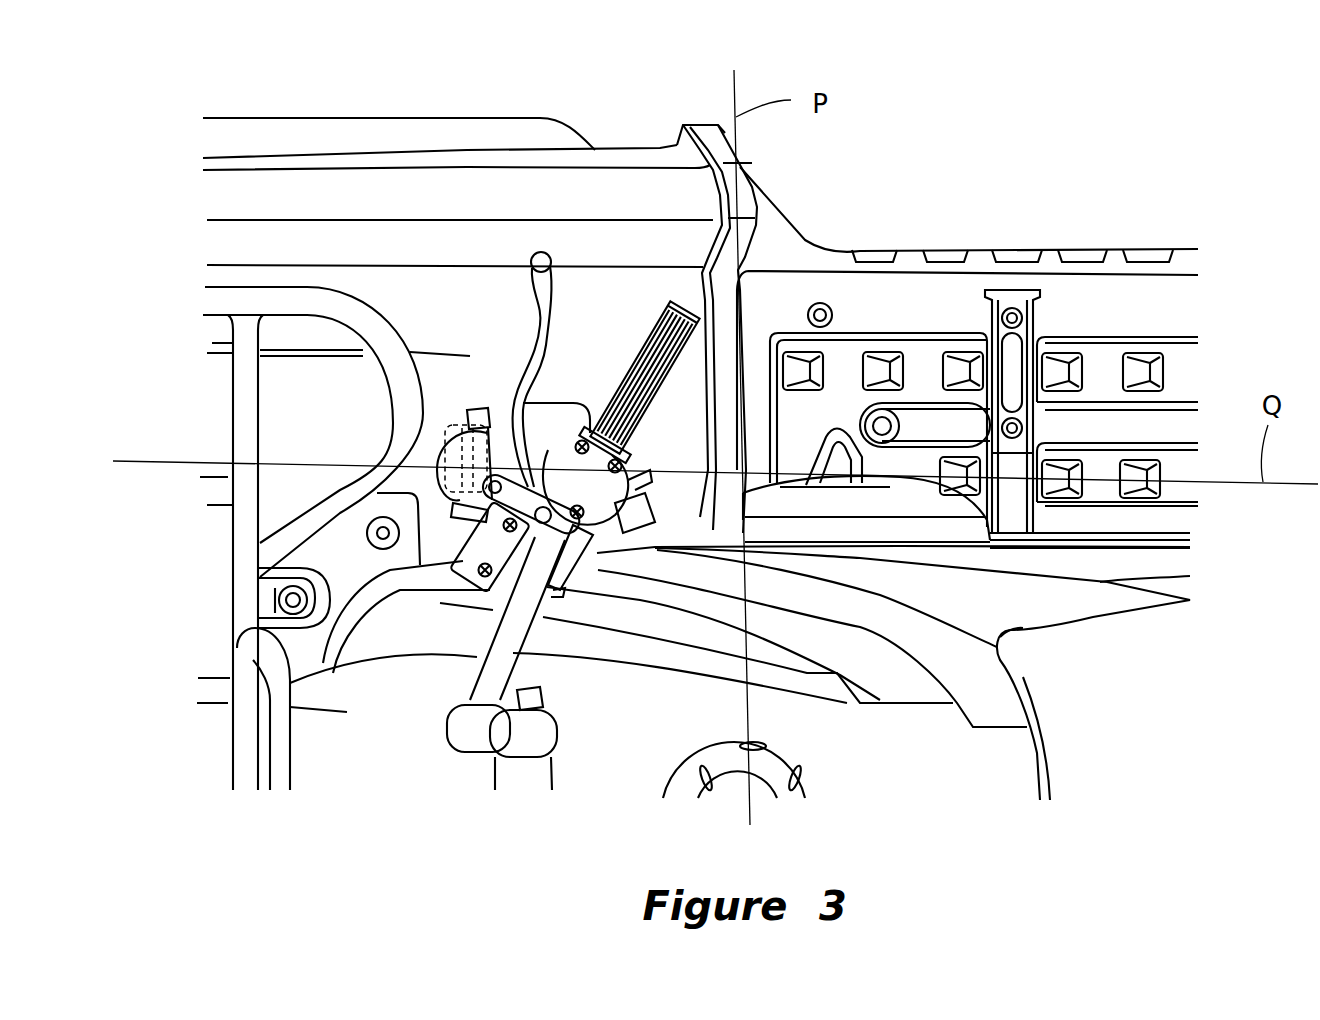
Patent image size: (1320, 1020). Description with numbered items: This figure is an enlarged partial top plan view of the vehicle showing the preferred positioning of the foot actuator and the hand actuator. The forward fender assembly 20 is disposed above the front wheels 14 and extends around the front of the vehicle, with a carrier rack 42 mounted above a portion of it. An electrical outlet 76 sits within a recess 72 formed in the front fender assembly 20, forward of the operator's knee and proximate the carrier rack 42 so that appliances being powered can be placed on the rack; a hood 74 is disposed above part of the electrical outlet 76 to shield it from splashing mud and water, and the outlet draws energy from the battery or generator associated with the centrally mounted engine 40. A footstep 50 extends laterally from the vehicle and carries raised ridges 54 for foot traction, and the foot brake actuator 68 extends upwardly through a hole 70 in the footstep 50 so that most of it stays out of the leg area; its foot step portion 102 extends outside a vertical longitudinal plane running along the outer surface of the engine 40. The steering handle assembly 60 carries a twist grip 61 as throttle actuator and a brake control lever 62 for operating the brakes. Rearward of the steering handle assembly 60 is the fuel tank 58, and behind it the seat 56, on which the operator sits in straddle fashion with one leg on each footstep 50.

The front wheels 14 is at (565, 120).
The forward fender assembly 20 is at (651, 155).
The engine 40 is at (895, 487).
The carrier rack 42 is at (373, 323).
The footsteps 50 is at (1078, 290).
The raised ridges 54 is at (998, 305).
The seat 56 is at (1083, 657).
The fuel tank 58 is at (968, 573).
The steering handle assembly 60 is at (490, 629).
The twist grip 61 is at (633, 446).
The brake control lever 62 is at (545, 320).
The foot brake actuator 68 is at (838, 432).
The hole 70 is at (812, 478).
The recess 72 is at (563, 430).
The hood 74 is at (475, 400).
The electrical outlet 76 is at (450, 500).
The foot step portion 102 is at (858, 450).